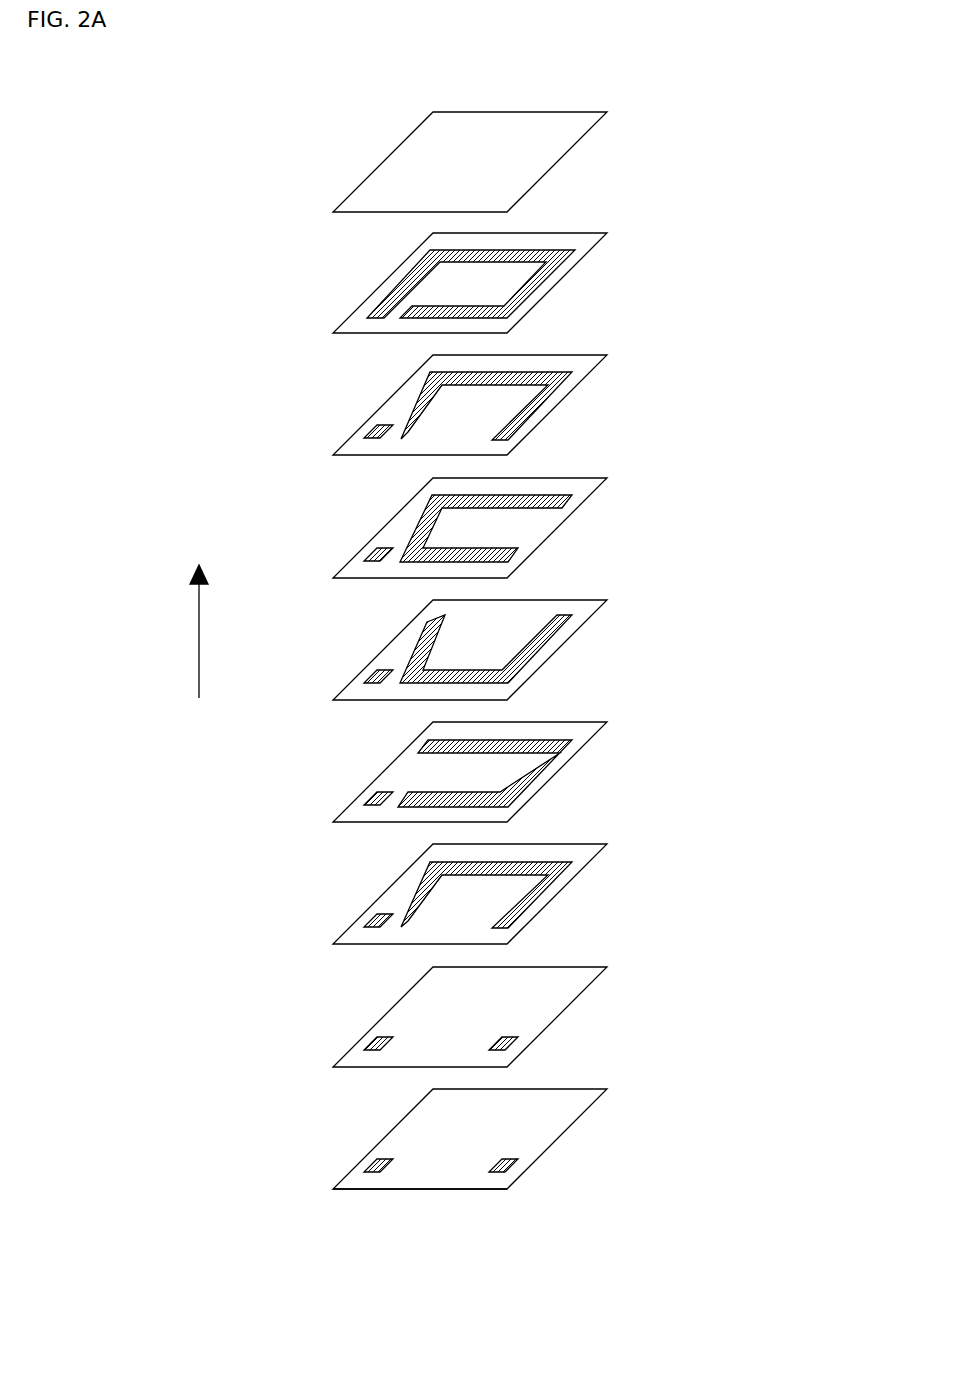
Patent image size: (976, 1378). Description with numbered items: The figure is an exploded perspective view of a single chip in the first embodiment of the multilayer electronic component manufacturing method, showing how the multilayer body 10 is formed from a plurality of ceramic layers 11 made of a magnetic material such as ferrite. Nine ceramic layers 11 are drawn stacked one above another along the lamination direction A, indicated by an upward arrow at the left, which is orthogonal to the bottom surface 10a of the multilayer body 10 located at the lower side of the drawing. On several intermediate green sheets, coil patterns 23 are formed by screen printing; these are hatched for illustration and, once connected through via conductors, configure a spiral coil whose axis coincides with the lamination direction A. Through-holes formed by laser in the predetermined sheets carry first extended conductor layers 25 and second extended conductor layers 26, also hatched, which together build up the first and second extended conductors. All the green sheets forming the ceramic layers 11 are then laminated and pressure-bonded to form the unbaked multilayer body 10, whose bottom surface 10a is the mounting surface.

The multilayer body 10 is at (684, 88).
The bottom surface 10a is at (437, 1190).
The ceramic layer 11 is at (540, 160).
The coil pattern 23 is at (508, 251).
The first extended conductor layer 25 is at (376, 429).
The second extended conductor layer 26 is at (518, 1041).
The lamination direction A is at (199, 632).